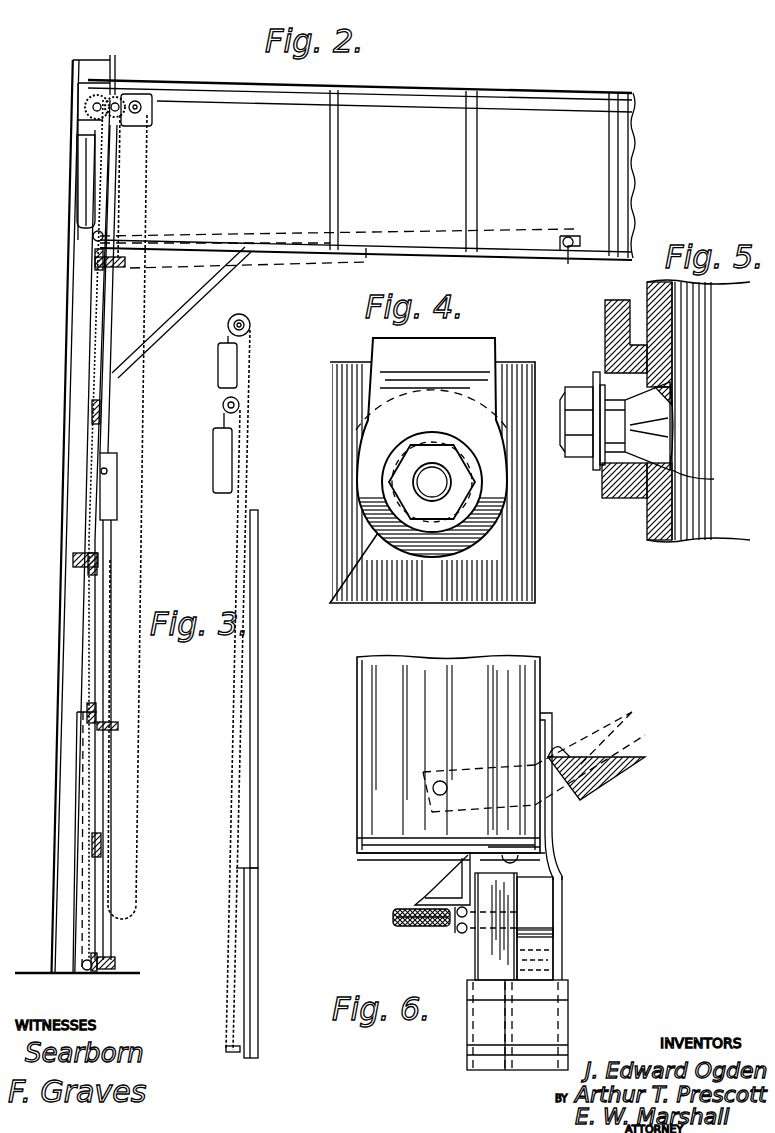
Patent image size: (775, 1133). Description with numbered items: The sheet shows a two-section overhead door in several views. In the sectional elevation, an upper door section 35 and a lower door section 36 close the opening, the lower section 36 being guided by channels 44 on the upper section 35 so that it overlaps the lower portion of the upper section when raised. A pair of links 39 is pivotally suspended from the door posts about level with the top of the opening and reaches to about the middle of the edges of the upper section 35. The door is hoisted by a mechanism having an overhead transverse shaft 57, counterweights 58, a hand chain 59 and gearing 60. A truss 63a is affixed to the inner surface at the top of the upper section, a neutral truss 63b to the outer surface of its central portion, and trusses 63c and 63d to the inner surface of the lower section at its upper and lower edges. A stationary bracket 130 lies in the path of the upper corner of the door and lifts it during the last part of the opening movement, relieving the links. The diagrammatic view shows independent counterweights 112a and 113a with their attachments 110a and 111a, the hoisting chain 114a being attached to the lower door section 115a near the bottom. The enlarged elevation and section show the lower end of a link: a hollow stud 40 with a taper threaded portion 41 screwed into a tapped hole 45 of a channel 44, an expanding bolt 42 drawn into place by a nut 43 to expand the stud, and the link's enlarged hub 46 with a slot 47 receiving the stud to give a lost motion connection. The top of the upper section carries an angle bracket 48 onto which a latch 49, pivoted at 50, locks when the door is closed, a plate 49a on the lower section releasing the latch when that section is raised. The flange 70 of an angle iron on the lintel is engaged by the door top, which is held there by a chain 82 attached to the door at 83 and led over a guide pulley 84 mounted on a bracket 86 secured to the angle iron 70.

In FIG. 2, the upper door section 35 is at (99, 405).
In FIG. 3, the upper door section 35 is at (258, 694).
In FIG. 6, the upper door section 35 is at (487, 950).
In FIG. 2, the lower door section 36 is at (106, 837).
In FIG. 3, the lower door section 36 is at (258, 910).
In FIG. 6, the lower door section 36 is at (545, 945).
In FIG. 2, the suspension link 39 is at (103, 438).
In FIG. 4, the suspension link 39 is at (478, 352).
In FIG. 5, the suspension link 39 is at (605, 318).
In FIG. 4, the hollow stud 40 is at (396, 491).
In FIG. 5, the hollow stud 40 is at (655, 390).
In FIG. 5, the taper threaded portion 41 is at (700, 479).
In FIG. 5, the expanding bolt 42 is at (603, 437).
In FIG. 4, the nut 43 is at (448, 502).
In FIG. 5, the nut 43 is at (580, 449).
In FIG. 2, the channel 44 is at (104, 570).
In FIG. 4, the channel 44 is at (340, 565).
In FIG. 5, the channel 44 is at (645, 541).
In FIG. 5, the tapped hole 45 is at (672, 393).
In FIG. 5, the hub 46 is at (628, 501).
In FIG. 4, the slot 47 is at (434, 441).
In FIG. 5, the slot 47 is at (597, 378).
In FIG. 6, the angle bracket 48 is at (560, 850).
In FIG. 6, the latch 49 is at (632, 714).
In FIG. 6, the plate 49a is at (563, 905).
In FIG. 6, the latch pivot 50 is at (445, 782).
In FIG. 2, the overhead transverse shaft 57 is at (142, 118).
In FIG. 2, the counterweight 58 is at (88, 180).
In FIG. 2, the hand chain 59 is at (157, 387).
In FIG. 2, the gearing 60 is at (120, 97).
In FIG. 2, the truss 63a is at (125, 262).
In FIG. 2, the truss 63b is at (76, 560).
In FIG. 2, the truss 63c is at (118, 725).
In FIG. 2, the truss 63d is at (117, 962).
In FIG. 6, the flange of angle iron 70 is at (440, 855).
In FIG. 6, the chain 82 is at (400, 918).
In FIG. 6, the point of attachment 83 is at (464, 930).
In FIG. 6, the guide pulley 84 is at (408, 928).
In FIG. 6, the bracket 86 is at (445, 872).
In FIG. 3, the counterweight attachment 110a is at (236, 871).
In FIG. 3, the counterweight attachment 111a is at (251, 408).
In FIG. 3, the counterweight 112a is at (218, 368).
In FIG. 3, the counterweight 113a is at (213, 483).
In FIG. 3, the hoisting chain 114a is at (237, 522).
In FIG. 3, the lower door section attachment 115a is at (233, 1052).
In FIG. 2, the stationary bracket 130 is at (563, 246).